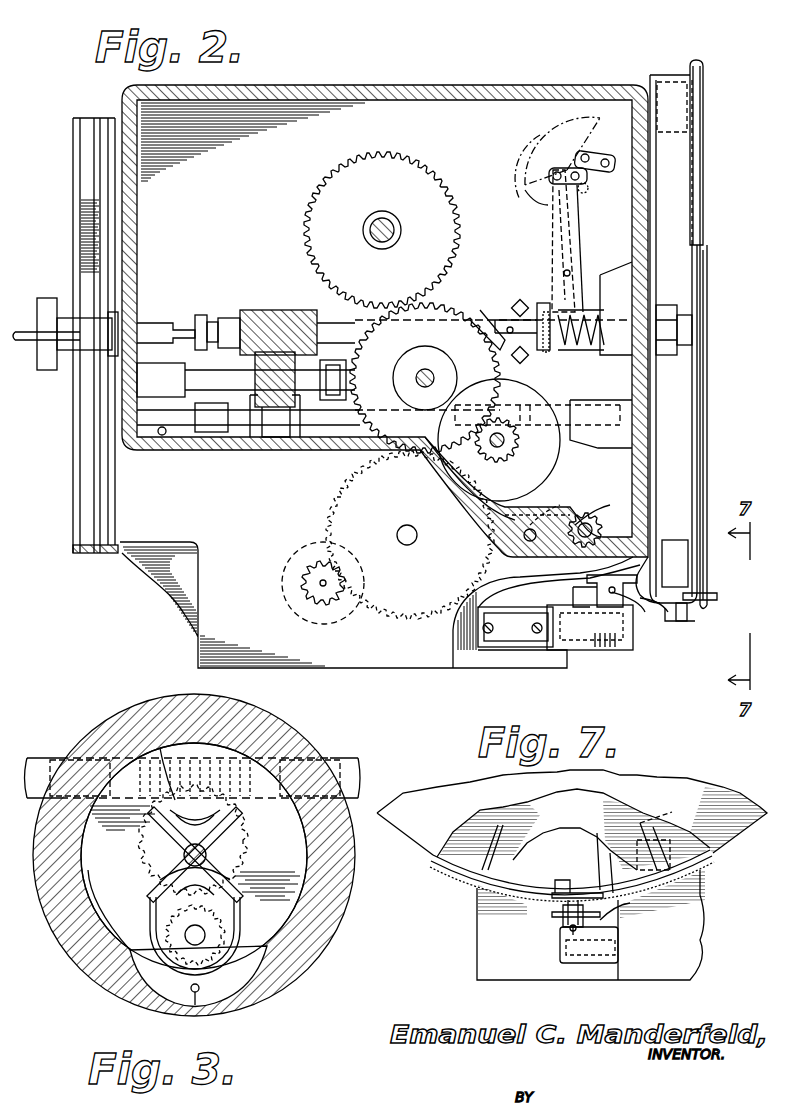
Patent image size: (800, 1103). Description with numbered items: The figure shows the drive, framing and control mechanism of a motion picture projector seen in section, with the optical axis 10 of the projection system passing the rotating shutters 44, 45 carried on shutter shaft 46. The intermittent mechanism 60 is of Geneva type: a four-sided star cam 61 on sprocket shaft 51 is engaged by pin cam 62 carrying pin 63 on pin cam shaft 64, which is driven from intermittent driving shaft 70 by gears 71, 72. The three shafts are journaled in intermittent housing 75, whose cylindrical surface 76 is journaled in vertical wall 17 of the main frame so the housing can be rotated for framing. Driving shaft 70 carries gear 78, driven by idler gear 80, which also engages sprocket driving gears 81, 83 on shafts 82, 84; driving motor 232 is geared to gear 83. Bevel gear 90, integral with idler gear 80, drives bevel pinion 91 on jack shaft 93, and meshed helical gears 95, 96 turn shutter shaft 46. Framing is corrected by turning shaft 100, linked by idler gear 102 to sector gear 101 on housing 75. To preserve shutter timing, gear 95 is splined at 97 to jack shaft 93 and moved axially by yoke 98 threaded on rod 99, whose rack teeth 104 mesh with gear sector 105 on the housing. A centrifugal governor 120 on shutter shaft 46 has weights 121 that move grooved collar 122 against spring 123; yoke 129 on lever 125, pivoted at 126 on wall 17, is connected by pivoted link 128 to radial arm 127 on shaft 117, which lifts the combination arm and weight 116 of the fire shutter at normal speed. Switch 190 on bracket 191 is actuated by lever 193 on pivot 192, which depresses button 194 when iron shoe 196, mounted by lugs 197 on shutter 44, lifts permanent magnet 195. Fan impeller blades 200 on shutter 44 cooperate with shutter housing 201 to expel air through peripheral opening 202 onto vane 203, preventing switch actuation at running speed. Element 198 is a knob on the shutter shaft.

In FIG. 2, the optical axis 10 is at (414, 84).
In FIG. 2, the vertical wall 17 is at (470, 174).
In FIG. 2, the rotating shutter 44 is at (707, 408).
In FIG. 7, the rotating shutter 44 is at (462, 880).
In FIG. 2, the rotating shutter 45 is at (96, 466).
In FIG. 2, the shutter shaft 46 is at (186, 322).
In FIG. 3, the sprocket shaft 51 is at (212, 857).
In FIG. 3, the intermittent mechanism 60 is at (285, 890).
In FIG. 3, the star cam 61 is at (158, 882).
In FIG. 3, the pin cam 62 is at (150, 945).
In FIG. 2, the pin 63 is at (690, 182).
In FIG. 3, the pin 63 is at (190, 1005).
In FIG. 3, the pin cam shaft 64 is at (206, 933).
In FIG. 2, the intermittent driving shaft 70 is at (506, 441).
In FIG. 3, the intermittent driving shaft 70 is at (150, 856).
In FIG. 3, the gear 71 is at (145, 878).
In FIG. 3, the gear 72 is at (150, 1000).
In FIG. 2, the intermittent housing 75 is at (536, 392).
In FIG. 3, the intermittent housing 75 is at (322, 963).
In FIG. 3, the cylindrical surface 76 is at (292, 985).
In FIG. 2, the gear 78 is at (450, 490).
In FIG. 2, the idler gear 80 is at (440, 312).
In FIG. 2, the sprocket driving gear 81 is at (456, 235).
In FIG. 2, the shaft 82 is at (396, 228).
In FIG. 2, the sprocket driving gear 83 is at (330, 505).
In FIG. 2, the shaft 84 is at (400, 533).
In FIG. 2, the bevel gear 90 is at (468, 318).
In FIG. 2, the bevel pinion 91 is at (400, 362).
In FIG. 2, the jack shaft 93 is at (190, 378).
In FIG. 2, the helical gear 95 is at (270, 408).
In FIG. 2, the helical gear 96 is at (284, 312).
In FIG. 2, the spline 97 is at (210, 430).
In FIG. 2, the yoke 98 is at (292, 430).
In FIG. 2, the rod 99 is at (330, 408).
In FIG. 3, the rod 99 is at (48, 768).
In FIG. 2, the shaft 100 is at (598, 522).
In FIG. 2, the sector gear 101 is at (578, 478).
In FIG. 2, the idler gear 102 is at (588, 500).
In FIG. 3, the cylindrical rack teeth 104 is at (160, 748).
In FIG. 3, the gear sector 105 is at (250, 828).
In FIG. 2, the combination arm and weight 116 is at (545, 118).
In FIG. 2, the shaft 117 is at (585, 155).
In FIG. 2, the centrifugal governor 120 is at (540, 302).
In FIG. 2, the governor weights 121 is at (512, 310).
In FIG. 2, the grooved collar 122 is at (533, 355).
In FIG. 2, the spring 123 is at (575, 378).
In FIG. 2, the lever 125 is at (560, 238).
In FIG. 2, the pivot 126 is at (570, 272).
In FIG. 2, the radial arm 127 is at (585, 185).
In FIG. 2, the pivoted link 128 is at (578, 200).
In FIG. 2, the yoke 129 is at (588, 318).
In FIG. 2, the switch 190 is at (592, 655).
In FIG. 7, the switch 190 is at (620, 940).
In FIG. 2, the bracket 191 is at (618, 652).
In FIG. 7, the bracket 191 is at (560, 950).
In FIG. 2, the pivot 192 is at (615, 650).
In FIG. 2, the switch actuating lever 193 is at (670, 615).
In FIG. 7, the switch actuating lever 193 is at (572, 930).
In FIG. 2, the actuating button 194 is at (562, 612).
In FIG. 2, the permanent magnet 195 is at (690, 608).
In FIG. 7, the permanent magnet 195 is at (562, 928).
In FIG. 2, the iron shoe 196 is at (708, 593).
In FIG. 7, the iron shoe 196 is at (568, 878).
In FIG. 7, the lugs 197 is at (552, 900).
In FIG. 2, the shaft 198 is at (52, 372).
In FIG. 2, the fan impeller blades 200 is at (662, 75).
In FIG. 7, the fan impeller blades 200 is at (672, 812).
In FIG. 2, the shutter housing 201 is at (707, 358).
In FIG. 7, the shutter housing 201 is at (428, 860).
In FIG. 2, the peripheral opening 202 is at (685, 580).
In FIG. 7, the peripheral opening 202 is at (635, 908).
In FIG. 2, the vane 203 is at (680, 620).
In FIG. 7, the vane 203 is at (555, 915).
In FIG. 2, the driving motor 232 is at (285, 568).